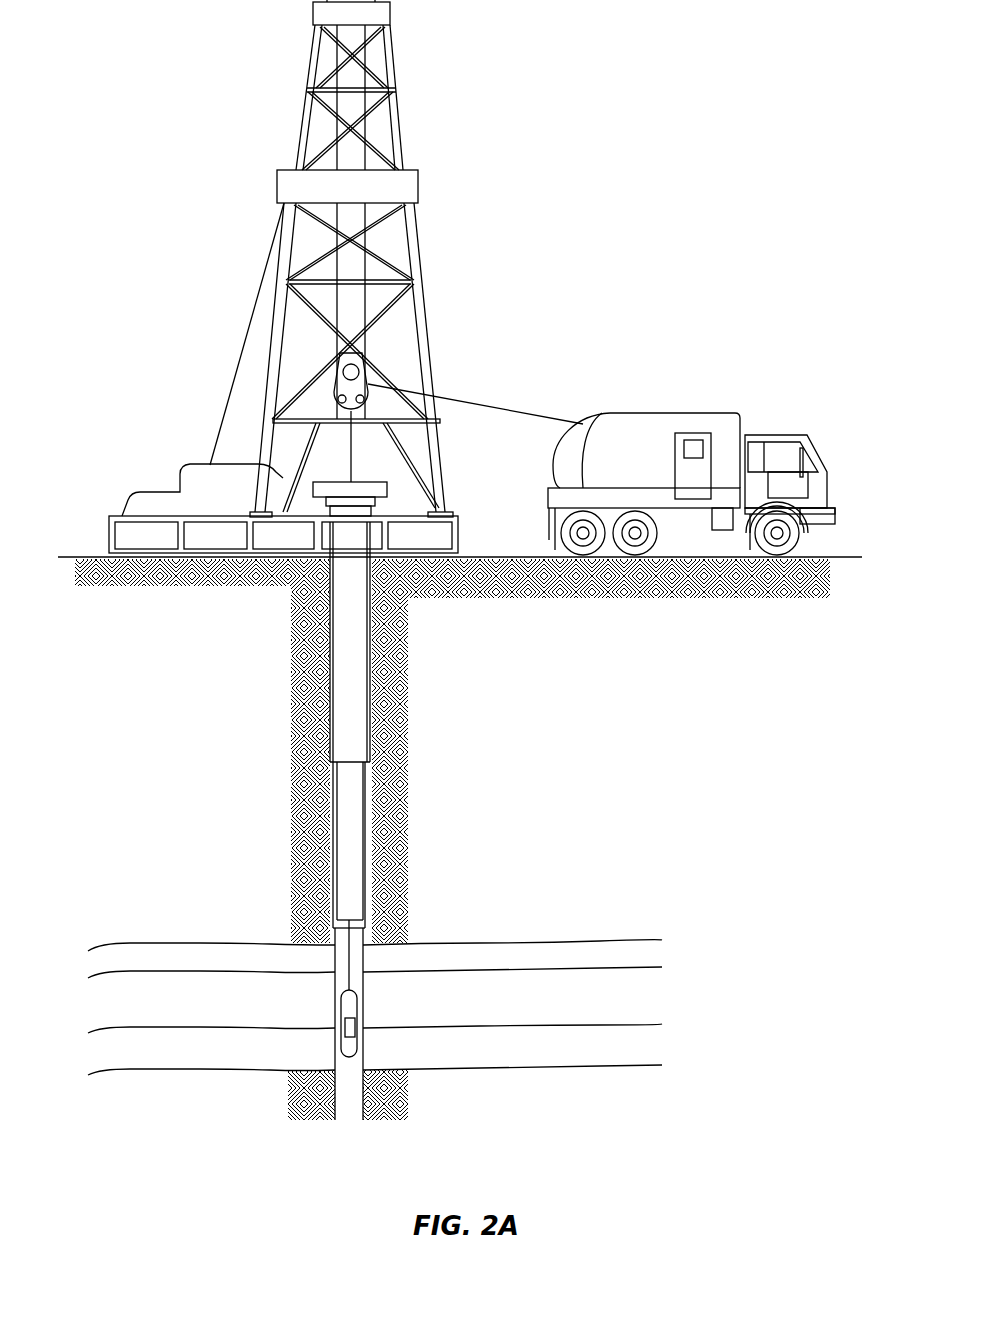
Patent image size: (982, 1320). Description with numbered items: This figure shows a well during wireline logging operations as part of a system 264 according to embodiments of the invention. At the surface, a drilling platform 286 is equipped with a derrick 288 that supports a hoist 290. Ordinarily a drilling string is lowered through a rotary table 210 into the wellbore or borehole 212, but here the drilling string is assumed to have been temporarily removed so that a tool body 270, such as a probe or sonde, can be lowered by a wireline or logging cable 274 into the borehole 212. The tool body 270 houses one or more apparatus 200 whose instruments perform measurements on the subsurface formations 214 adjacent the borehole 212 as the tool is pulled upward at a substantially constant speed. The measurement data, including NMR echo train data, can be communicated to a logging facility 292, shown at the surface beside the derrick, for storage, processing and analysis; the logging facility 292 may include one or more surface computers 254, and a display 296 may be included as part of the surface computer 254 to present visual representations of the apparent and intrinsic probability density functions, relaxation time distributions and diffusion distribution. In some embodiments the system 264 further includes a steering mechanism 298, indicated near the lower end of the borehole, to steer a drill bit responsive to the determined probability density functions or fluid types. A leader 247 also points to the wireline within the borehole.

The system 264 is at (560, 248).
The hoist 290 is at (365, 372).
The wireline or logging cable 274 is at (470, 407).
The logging facility 292 is at (637, 413).
The display 296 is at (704, 440).
The surface computer 254 is at (675, 483).
The rotary table 210 is at (390, 487).
The derrick 288 is at (443, 495).
The drilling platform 286 is at (458, 537).
The wellbore or borehole 212 is at (333, 958).
The wireline 247 is at (348, 977).
The tool body 270 is at (357, 1005).
The apparatus 200 is at (353, 1028).
The steering mechanism 298 is at (357, 1100).
The subsurface formations 214 is at (670, 935).